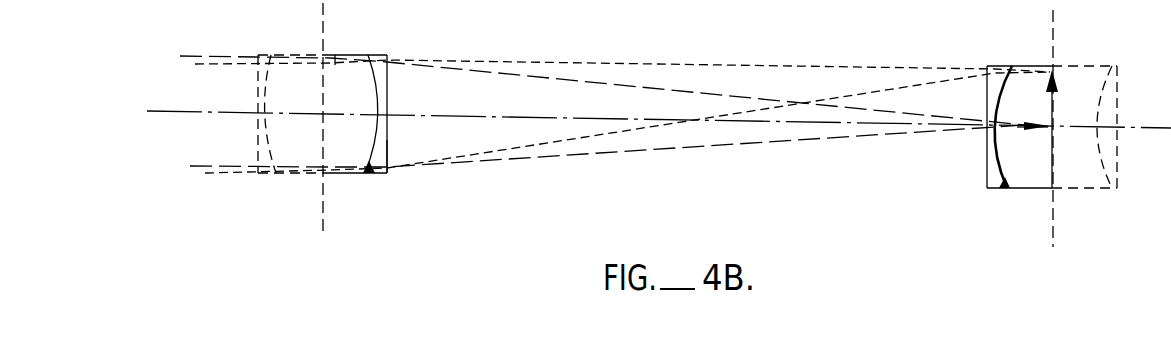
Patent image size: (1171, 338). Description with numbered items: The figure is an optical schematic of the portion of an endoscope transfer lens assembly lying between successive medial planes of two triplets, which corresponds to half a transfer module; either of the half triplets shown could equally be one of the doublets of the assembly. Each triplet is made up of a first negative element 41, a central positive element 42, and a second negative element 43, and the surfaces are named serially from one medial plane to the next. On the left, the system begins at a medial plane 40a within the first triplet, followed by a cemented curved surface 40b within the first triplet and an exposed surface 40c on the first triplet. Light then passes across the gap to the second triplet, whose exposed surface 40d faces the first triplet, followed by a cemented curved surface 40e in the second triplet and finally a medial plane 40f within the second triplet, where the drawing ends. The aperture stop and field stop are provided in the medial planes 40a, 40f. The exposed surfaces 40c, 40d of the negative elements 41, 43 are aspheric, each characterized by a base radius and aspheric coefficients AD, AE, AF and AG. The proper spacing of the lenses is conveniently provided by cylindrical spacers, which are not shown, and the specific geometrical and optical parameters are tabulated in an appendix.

The first negative element 41 is at (271, 48).
The central positive element 42 is at (335, 56).
The second negative element 43 is at (381, 52).
The medial plane 40a is at (388, 258).
The cemented curved surface 40b is at (376, 165).
The exposed surface 40c is at (387, 152).
The exposed surface 40d is at (985, 173).
The cemented curved surface 40e is at (1000, 184).
The medial plane 40f is at (1050, 232).